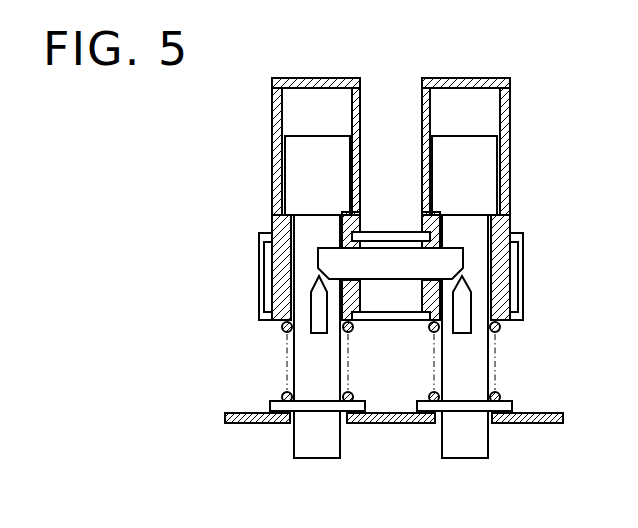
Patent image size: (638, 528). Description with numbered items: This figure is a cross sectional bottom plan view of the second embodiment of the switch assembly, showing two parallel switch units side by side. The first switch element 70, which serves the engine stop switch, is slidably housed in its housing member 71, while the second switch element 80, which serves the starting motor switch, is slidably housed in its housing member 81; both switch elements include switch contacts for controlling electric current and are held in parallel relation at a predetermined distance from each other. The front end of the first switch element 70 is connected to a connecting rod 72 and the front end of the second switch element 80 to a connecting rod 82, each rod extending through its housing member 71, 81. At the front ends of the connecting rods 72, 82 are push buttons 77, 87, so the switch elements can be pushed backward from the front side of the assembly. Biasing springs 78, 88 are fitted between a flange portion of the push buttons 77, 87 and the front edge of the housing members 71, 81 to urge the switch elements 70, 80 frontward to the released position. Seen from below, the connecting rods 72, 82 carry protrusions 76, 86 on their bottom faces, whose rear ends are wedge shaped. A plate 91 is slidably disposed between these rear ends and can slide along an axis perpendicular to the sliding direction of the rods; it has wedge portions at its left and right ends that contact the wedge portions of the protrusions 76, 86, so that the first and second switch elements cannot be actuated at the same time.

The housing member 81 is at (305, 78).
The housing member 71 is at (455, 79).
The second switch element 80 is at (292, 148).
The first switch element 70 is at (485, 148).
The connecting rod 82 is at (308, 216).
The connecting rod 72 is at (465, 216).
The plate 91 is at (452, 263).
The protrusion 86 is at (318, 322).
The protrusion 76 is at (466, 328).
The biasing spring 88 is at (289, 378).
The biasing spring 78 is at (430, 372).
The push button 87 is at (318, 458).
The push button 77 is at (464, 458).